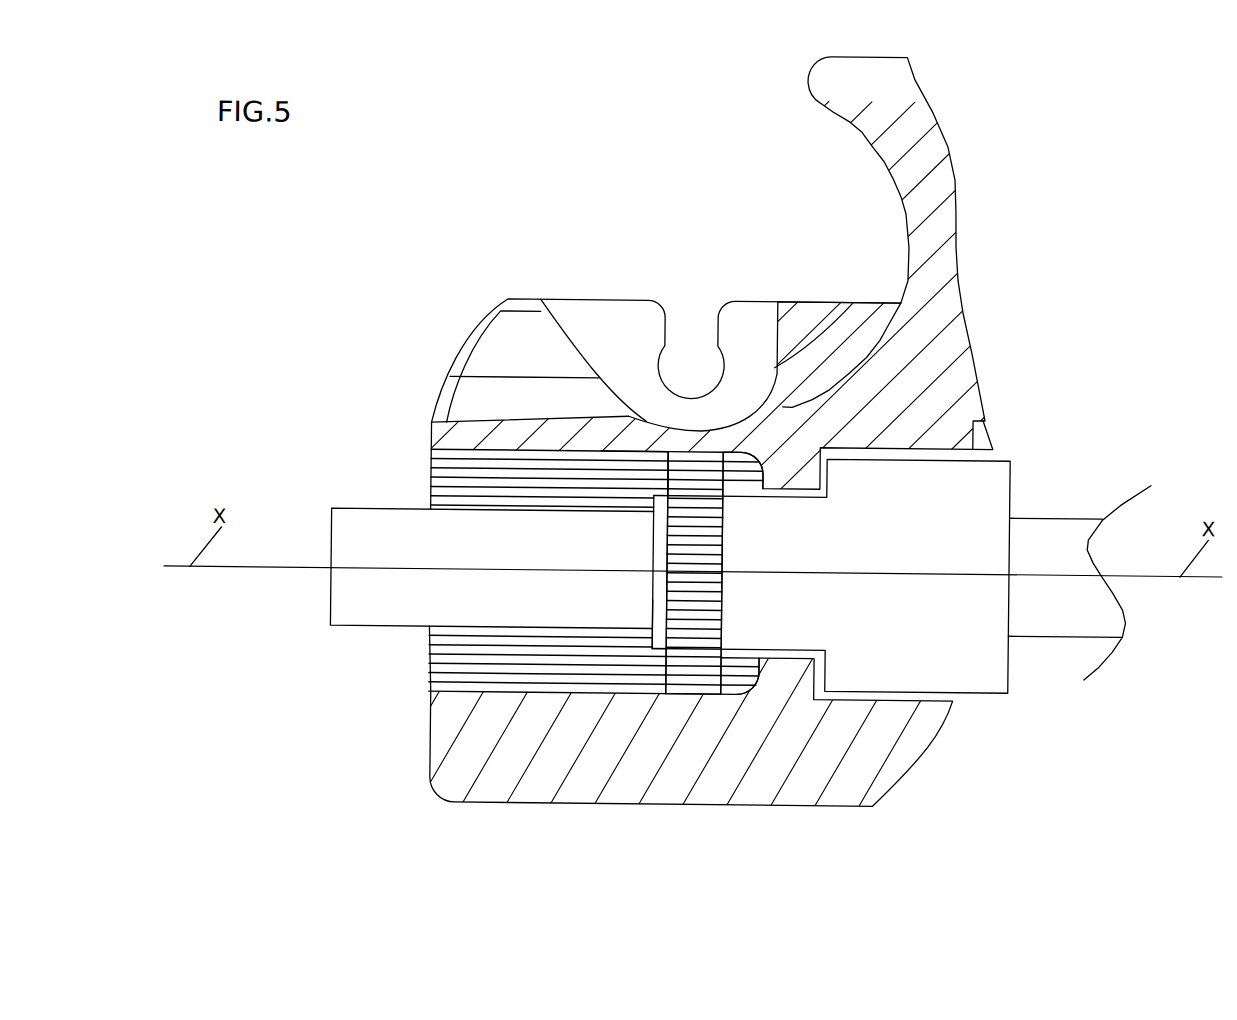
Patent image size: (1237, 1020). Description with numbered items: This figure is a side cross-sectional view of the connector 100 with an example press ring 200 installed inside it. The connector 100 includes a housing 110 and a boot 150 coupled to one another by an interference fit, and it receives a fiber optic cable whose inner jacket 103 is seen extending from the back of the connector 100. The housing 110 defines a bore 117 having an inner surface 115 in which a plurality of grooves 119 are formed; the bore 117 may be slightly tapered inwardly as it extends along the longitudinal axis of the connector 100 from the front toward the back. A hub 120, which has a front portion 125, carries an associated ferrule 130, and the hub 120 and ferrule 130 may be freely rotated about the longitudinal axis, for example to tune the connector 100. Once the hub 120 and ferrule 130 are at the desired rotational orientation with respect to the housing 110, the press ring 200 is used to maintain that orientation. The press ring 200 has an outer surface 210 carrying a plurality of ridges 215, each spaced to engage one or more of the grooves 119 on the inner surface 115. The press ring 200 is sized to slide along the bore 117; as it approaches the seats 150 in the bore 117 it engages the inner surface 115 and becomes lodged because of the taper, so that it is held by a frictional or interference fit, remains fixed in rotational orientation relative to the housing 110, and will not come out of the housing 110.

The connector 100 is at (620, 216).
The inner jacket 103 is at (1065, 611).
The housing 110 is at (430, 429).
The inner surface 115 is at (519, 450).
The bore 117 is at (430, 477).
The plurality of grooves 119 is at (638, 488).
The hub 120 is at (982, 491).
The front portion 125 is at (653, 642).
The ferrule 130 is at (362, 614).
The boot 150 is at (747, 452).
The press ring 200 is at (700, 678).
The outer surface 210 is at (713, 613).
The plurality of ridges 215 is at (700, 550).